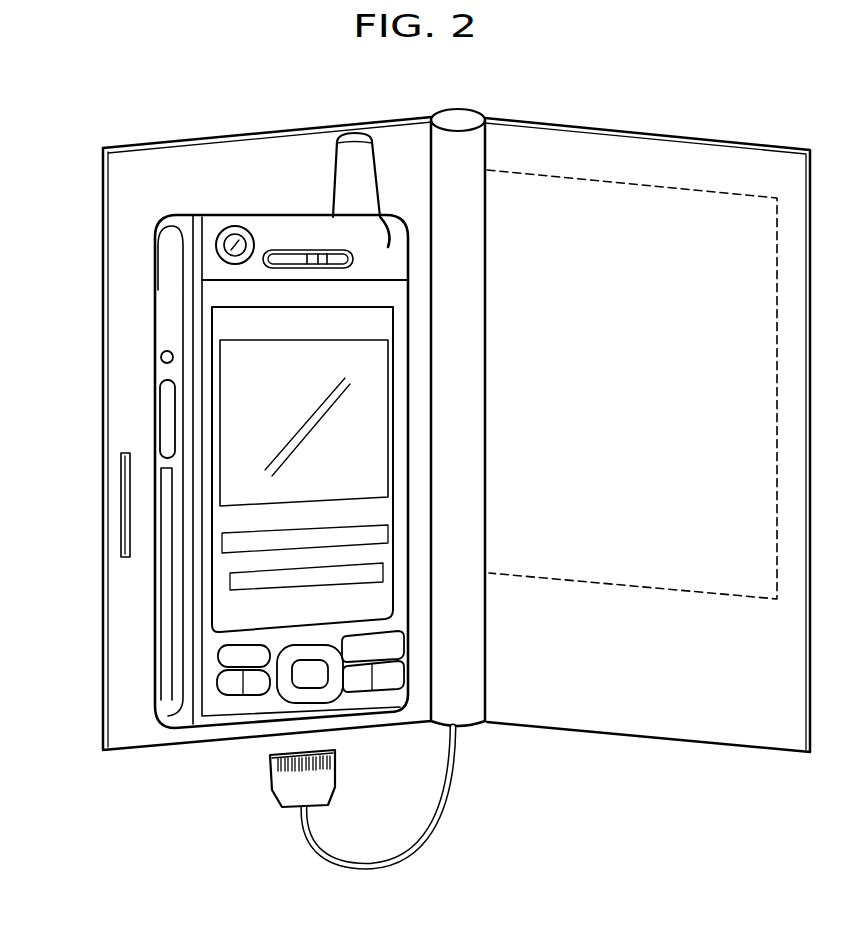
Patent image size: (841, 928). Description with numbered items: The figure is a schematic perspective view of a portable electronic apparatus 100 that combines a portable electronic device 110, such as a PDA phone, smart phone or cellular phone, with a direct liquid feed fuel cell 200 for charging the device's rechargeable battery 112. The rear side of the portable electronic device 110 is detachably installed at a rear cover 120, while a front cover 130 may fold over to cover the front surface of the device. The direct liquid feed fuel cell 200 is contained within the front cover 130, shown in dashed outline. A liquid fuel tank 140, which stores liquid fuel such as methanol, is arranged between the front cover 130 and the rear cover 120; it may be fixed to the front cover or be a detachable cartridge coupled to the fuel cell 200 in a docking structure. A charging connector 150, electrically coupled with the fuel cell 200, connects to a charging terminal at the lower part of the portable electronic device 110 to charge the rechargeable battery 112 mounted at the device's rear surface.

The portable electronic apparatus 100 is at (262, 121).
The portable electronic device 110 is at (150, 509).
The rechargeable battery 112 is at (162, 618).
The rear cover 120 is at (153, 146).
The front cover 130 is at (697, 733).
The liquid fuel tank 140 is at (468, 152).
The charging connector 150 is at (303, 838).
The direct liquid feed fuel cell 200 is at (623, 583).